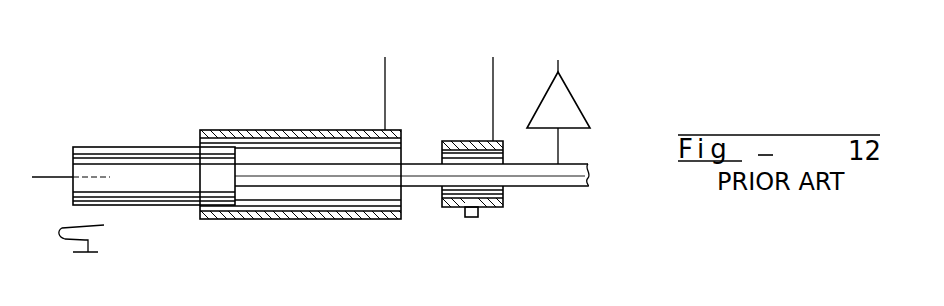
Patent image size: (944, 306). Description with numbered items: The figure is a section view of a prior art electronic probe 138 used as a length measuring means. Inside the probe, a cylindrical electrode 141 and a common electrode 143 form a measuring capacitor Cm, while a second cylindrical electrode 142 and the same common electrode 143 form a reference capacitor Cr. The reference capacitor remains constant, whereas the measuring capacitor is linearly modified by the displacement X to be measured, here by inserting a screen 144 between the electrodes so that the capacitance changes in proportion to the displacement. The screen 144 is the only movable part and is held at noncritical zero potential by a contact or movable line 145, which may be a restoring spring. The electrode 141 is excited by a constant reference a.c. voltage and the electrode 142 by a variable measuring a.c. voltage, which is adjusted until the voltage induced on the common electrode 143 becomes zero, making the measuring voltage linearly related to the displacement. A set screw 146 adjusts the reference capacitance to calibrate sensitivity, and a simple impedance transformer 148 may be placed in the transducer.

The electronic probe 138 is at (175, 137).
The cylindrical electrode 141 is at (312, 219).
The cylindrical electrode 142 is at (497, 207).
The common electrode 143 is at (557, 187).
The screen 144 is at (180, 205).
The contact or movable line 145 is at (87, 205).
The set screw 146 is at (470, 217).
The impedance transformer 148 is at (565, 108).